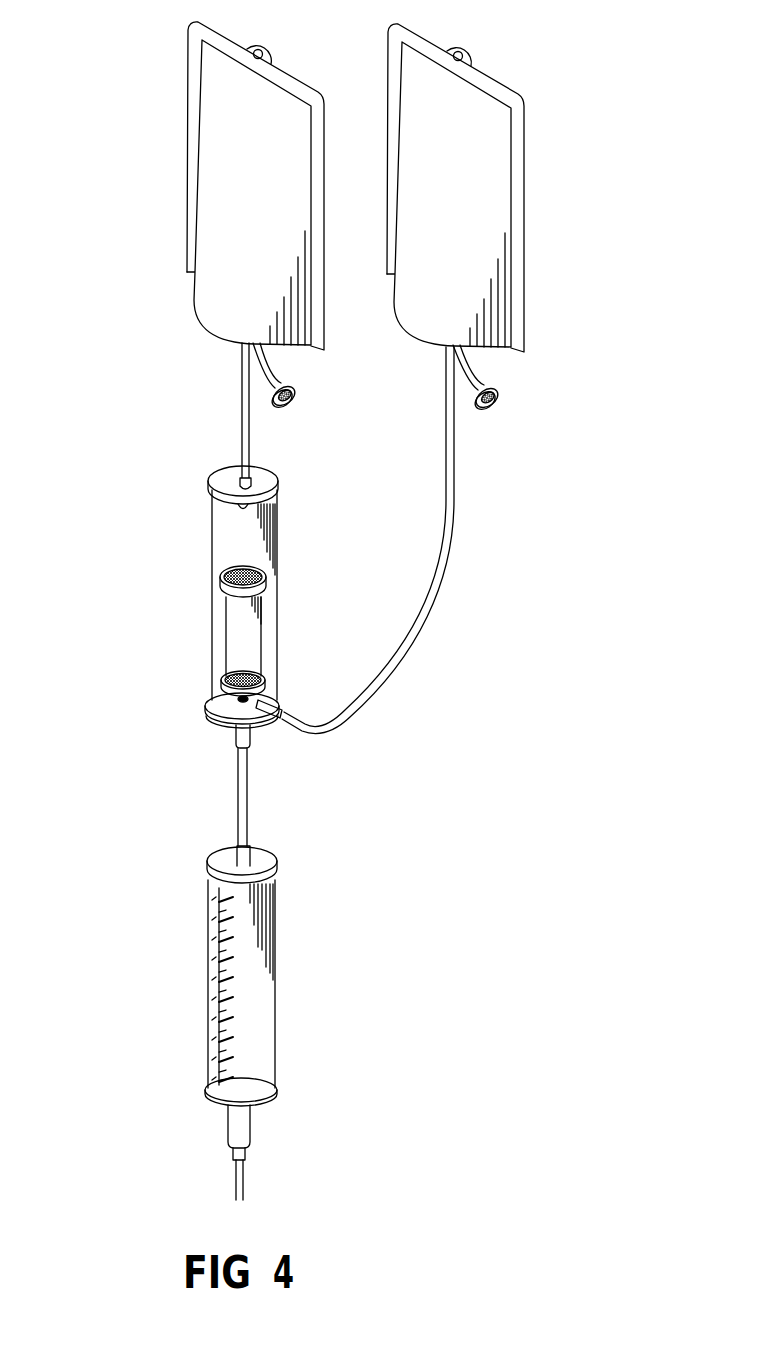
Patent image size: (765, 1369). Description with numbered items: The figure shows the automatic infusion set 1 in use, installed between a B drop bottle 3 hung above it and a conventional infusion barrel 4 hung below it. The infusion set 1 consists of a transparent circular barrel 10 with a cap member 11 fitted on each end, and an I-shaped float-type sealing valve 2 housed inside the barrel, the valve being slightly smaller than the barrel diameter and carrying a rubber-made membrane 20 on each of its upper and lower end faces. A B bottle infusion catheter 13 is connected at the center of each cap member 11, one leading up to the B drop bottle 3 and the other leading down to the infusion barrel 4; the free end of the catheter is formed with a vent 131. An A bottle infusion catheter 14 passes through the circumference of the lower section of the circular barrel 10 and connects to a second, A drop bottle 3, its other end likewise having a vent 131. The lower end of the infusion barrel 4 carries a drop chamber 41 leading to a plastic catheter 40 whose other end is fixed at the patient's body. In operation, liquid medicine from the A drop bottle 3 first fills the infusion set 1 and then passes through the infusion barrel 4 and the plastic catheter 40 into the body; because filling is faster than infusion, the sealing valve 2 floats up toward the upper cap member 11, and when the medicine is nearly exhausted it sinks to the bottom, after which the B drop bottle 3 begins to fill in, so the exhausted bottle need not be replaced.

The automatic infusion set 1 is at (196, 590).
The float-type sealing valve 2 is at (262, 643).
The drop bottle 3 is at (187, 150).
The infusion barrel 4 is at (274, 977).
The transparent circular barrel 10 is at (212, 530).
The cap member 11 is at (279, 485).
The B bottle infusion catheter 13 is at (248, 790).
The A bottle infusion catheter 14 is at (421, 612).
The rubber-made membrane 20 is at (266, 577).
The plastic catheter 40 is at (246, 1178).
The drop chamber 41 is at (230, 1127).
The vent 131 is at (295, 400).